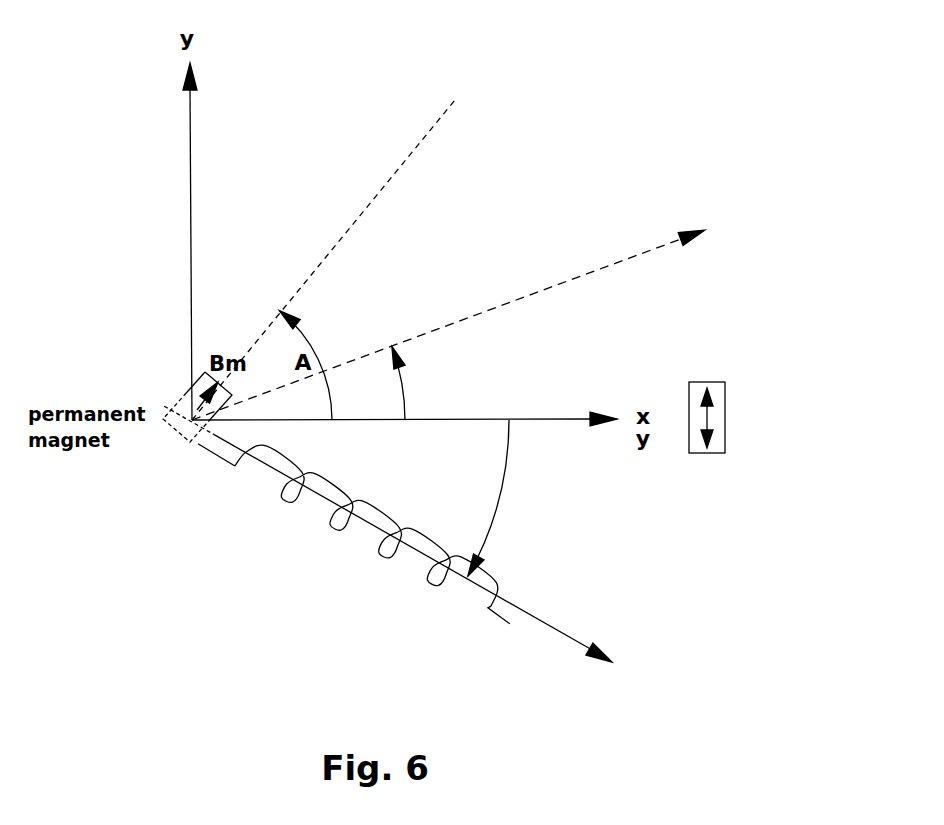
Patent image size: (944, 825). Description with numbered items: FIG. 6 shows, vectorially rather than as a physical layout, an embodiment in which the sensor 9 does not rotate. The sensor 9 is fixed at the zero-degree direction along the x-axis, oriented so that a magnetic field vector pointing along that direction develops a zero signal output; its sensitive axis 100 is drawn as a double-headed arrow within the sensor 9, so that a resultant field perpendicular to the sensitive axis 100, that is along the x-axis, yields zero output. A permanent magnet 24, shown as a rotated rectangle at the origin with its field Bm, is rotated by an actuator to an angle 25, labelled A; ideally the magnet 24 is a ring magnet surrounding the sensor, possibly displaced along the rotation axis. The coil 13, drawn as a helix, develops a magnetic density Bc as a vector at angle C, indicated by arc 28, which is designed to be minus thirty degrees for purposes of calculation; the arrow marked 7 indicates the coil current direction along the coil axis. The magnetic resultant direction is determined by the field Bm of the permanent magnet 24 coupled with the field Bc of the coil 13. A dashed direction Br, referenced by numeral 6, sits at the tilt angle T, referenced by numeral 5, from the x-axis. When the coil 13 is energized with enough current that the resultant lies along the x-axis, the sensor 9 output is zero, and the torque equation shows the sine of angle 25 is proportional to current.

The magnet 24 is at (188, 398).
The angle 25 is at (312, 344).
The tilt angle T of the remanent field 5 is at (407, 382).
The remanent magnetic field direction Br 6 is at (627, 258).
The sensitive axis 100 is at (710, 407).
The sensor 9 is at (727, 408).
The coil 13 is at (282, 498).
The coil axis / coil field direction Bc 7 is at (490, 645).
The angle C between coil axis and x-axis 28 is at (503, 497).